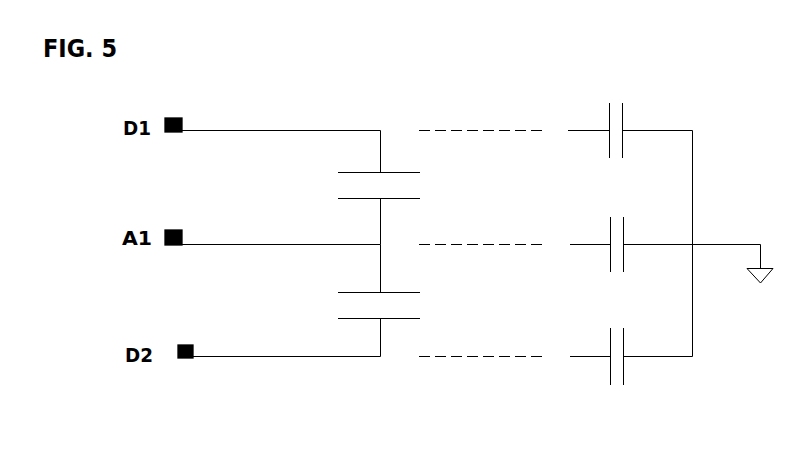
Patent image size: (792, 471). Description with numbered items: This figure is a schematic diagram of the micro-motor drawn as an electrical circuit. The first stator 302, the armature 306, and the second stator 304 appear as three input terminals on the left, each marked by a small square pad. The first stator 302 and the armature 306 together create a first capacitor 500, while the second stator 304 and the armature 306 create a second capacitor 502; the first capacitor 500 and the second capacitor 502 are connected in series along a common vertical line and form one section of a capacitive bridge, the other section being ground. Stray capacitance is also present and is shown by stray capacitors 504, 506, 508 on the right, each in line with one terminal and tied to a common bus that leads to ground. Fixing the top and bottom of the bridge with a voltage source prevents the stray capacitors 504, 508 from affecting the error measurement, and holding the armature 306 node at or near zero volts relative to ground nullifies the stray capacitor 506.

The first stator 302 is at (273, 115).
The armature 306 is at (273, 232).
The second stator 304 is at (279, 343).
The first capacitor 500 is at (405, 188).
The second capacitor 502 is at (405, 301).
The stray capacitor 504 is at (630, 115).
The stray capacitor 506 is at (631, 227).
The stray capacitor 508 is at (631, 340).